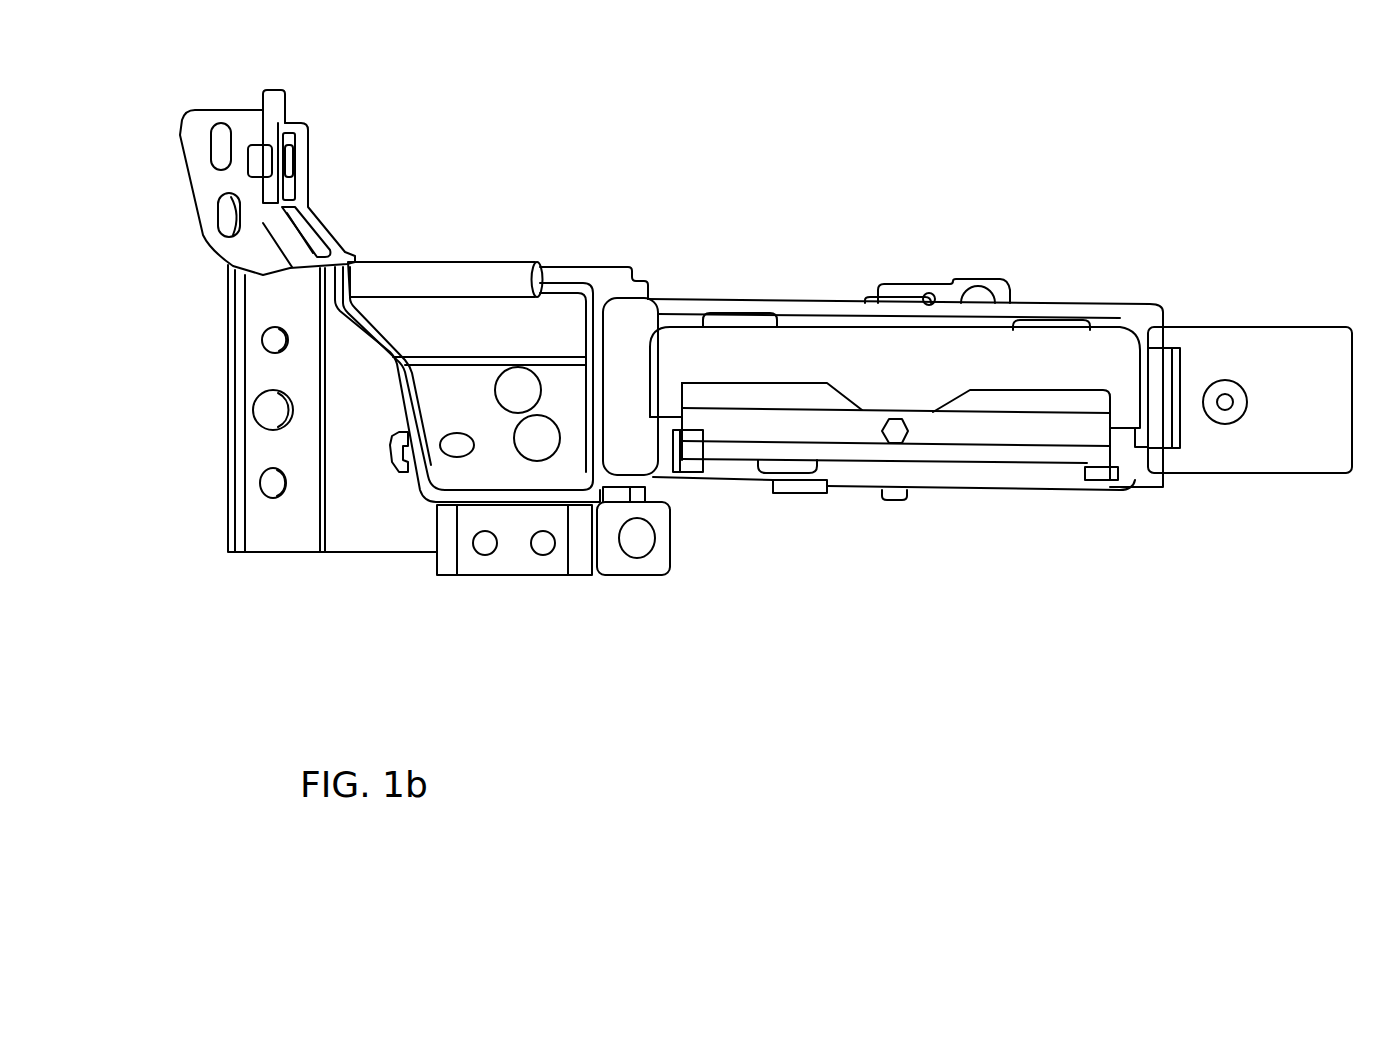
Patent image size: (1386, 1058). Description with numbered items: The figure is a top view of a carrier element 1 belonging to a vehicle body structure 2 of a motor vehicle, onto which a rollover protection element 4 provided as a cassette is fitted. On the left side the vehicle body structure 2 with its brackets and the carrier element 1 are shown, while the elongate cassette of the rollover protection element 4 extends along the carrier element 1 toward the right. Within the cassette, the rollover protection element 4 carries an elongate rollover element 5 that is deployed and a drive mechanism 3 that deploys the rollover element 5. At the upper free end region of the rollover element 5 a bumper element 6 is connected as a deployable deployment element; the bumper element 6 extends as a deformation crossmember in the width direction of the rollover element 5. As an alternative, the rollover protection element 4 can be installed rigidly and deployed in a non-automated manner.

The carrier element 1 is at (688, 314).
The vehicle body structure 2 is at (380, 190).
The drive mechanism 3 is at (904, 520).
The rollover protection element 4 is at (947, 212).
The rollover element 5 is at (1065, 515).
The bumper element 6 is at (802, 346).